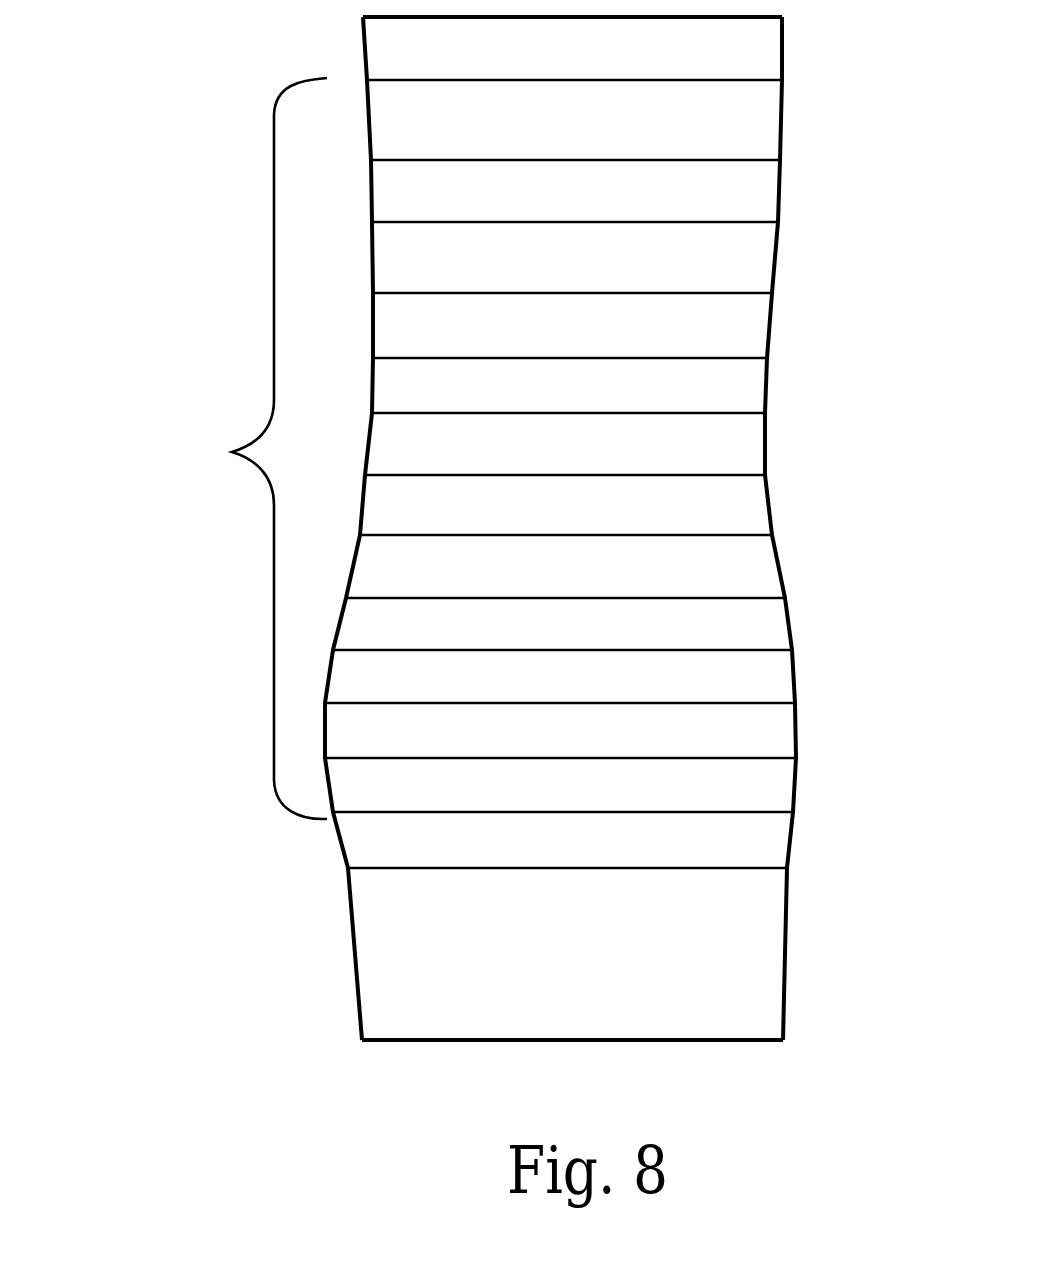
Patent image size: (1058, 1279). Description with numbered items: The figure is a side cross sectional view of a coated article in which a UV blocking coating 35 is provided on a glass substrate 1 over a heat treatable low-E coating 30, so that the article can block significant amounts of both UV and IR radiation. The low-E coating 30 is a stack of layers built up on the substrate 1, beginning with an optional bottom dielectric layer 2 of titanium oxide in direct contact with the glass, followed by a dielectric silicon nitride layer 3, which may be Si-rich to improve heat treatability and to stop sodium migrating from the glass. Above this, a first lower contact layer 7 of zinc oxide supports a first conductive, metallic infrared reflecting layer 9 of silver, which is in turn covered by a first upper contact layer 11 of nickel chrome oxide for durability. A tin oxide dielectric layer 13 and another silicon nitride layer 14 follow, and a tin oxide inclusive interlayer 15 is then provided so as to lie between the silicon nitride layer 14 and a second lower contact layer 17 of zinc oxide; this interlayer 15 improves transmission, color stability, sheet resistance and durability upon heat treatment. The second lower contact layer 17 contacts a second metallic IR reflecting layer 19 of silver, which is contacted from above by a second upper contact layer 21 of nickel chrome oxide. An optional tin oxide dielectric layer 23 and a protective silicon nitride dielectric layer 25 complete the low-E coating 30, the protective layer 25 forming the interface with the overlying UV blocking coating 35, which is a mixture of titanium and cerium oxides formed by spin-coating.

The glass substrate 1 is at (745, 953).
The bottom dielectric layer 2 is at (778, 839).
The dielectric silicon nitride layer 3 is at (778, 786).
The first lower contact layer 7 is at (770, 732).
The first infrared reflecting layer 9 is at (765, 675).
The first upper contact layer 11 is at (760, 620).
The dielectric layer 13 is at (735, 566).
The silicon nitride layer 14 is at (760, 498).
The tin oxide inclusive interlayer 15 is at (752, 437).
The second lower contact layer 17 is at (747, 379).
The second infrared reflecting layer 19 is at (745, 321).
The second upper contact layer 21 is at (750, 258).
The dielectric layer 23 is at (757, 181).
The protective dielectric layer 25 is at (780, 118).
The low-E coating 30 is at (258, 628).
The UV blocking coating 35 is at (775, 51).